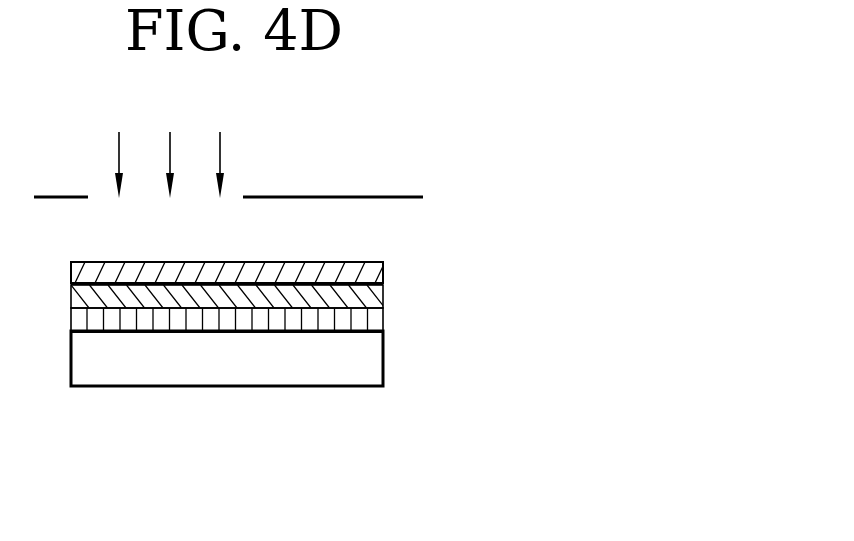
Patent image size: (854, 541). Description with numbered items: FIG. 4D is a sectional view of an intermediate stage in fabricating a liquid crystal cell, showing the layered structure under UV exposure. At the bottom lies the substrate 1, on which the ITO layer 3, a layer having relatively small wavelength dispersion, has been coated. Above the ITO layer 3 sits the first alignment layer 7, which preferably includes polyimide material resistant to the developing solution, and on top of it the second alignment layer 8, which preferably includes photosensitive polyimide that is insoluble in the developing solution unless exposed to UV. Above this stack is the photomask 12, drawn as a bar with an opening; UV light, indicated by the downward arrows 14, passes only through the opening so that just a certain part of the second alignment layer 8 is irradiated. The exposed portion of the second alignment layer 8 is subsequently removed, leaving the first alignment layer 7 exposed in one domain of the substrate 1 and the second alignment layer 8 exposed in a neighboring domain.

The substrate 1 is at (377, 371).
The ITO layer 3 is at (373, 324).
The first alignment layer 7 is at (373, 302).
The second alignment layer 8 is at (372, 274).
The photomask 12 is at (337, 196).
The irradiation beam 14 is at (221, 133).